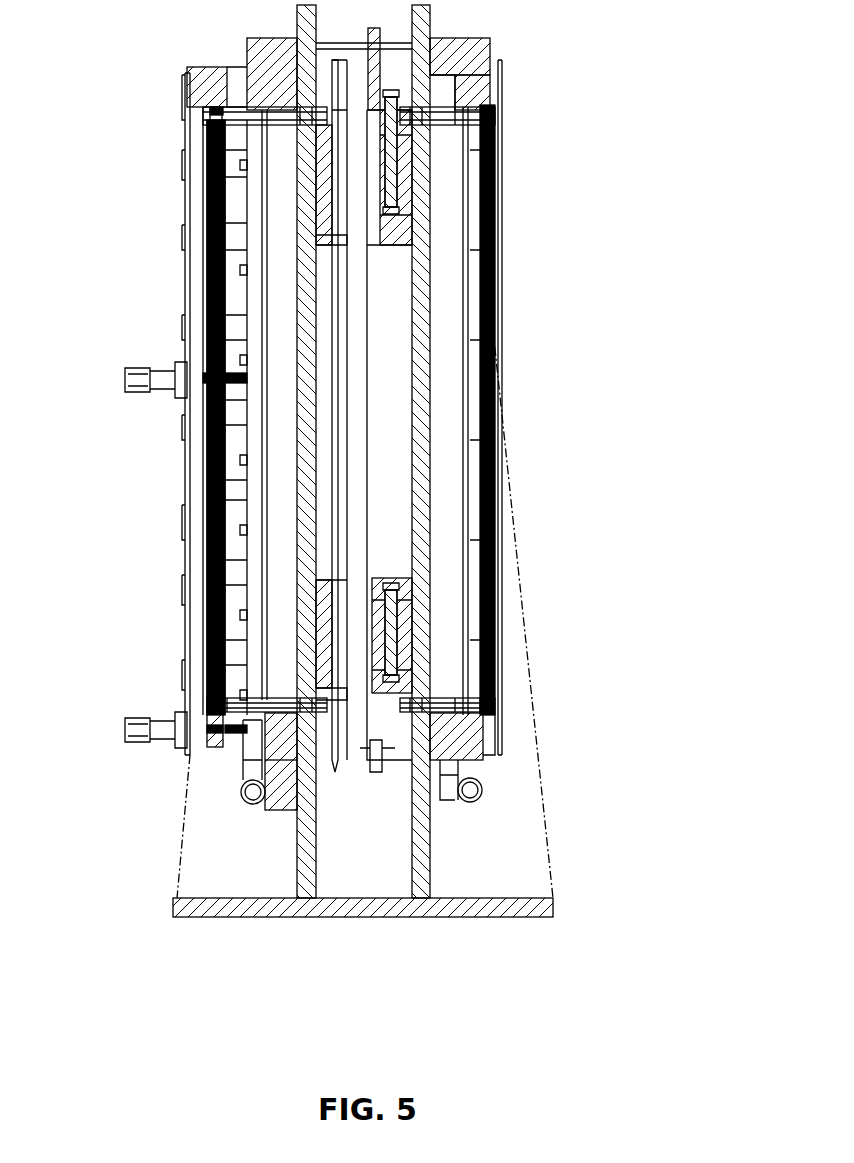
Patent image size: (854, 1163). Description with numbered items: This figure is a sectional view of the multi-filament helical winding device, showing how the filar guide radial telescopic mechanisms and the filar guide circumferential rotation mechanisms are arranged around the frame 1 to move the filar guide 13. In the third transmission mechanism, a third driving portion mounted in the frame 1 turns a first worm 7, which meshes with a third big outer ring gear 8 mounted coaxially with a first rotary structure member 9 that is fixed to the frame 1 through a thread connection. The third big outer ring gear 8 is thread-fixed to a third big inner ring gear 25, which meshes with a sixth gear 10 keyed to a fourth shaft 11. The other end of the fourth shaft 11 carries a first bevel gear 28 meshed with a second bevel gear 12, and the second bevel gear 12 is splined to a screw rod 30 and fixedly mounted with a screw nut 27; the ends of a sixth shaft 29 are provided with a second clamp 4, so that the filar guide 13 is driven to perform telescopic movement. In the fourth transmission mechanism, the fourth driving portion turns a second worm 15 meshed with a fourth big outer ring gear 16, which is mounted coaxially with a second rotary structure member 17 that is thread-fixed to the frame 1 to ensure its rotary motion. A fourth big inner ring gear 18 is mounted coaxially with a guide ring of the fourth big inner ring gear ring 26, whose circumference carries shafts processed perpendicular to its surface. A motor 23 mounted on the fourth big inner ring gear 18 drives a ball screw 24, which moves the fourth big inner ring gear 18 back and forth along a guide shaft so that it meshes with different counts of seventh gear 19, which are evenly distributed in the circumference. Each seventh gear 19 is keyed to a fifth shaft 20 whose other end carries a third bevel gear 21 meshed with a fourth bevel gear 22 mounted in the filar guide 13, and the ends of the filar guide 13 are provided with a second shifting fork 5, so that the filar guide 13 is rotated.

The frame 1 is at (173, 900).
The second clamp 4 is at (490, 70).
The second shifting fork 5 is at (418, 800).
The first worm 7 is at (492, 785).
The third big outer ring gear 8 is at (493, 745).
The first rotary structure member 9 is at (475, 790).
The sixth gear 10 is at (490, 108).
The fourth shaft 11 is at (437, 713).
The second bevel gear 12 is at (493, 153).
The filar guide 13 is at (340, 315).
The second worm 15 is at (245, 795).
The fourth big outer ring gear 16 is at (250, 757).
The second rotary structure member 17 is at (215, 675).
The fourth big inner ring gear 18 is at (243, 733).
The seventh gear 19 is at (210, 120).
The fifth shaft 20 is at (200, 108).
The third bevel gear 21 is at (305, 760).
The fourth bevel gear 22 is at (343, 720).
The motor 23 is at (130, 718).
The ball screw 24 is at (205, 712).
The third big inner ring gear 25 is at (493, 368).
The guide ring of the fourth big inner ring gear ring 26 is at (188, 478).
The screw nut 27 is at (440, 654).
The first bevel gear 28 is at (493, 133).
The sixth shaft 29 is at (372, 760).
The screw rod 30 is at (410, 612).